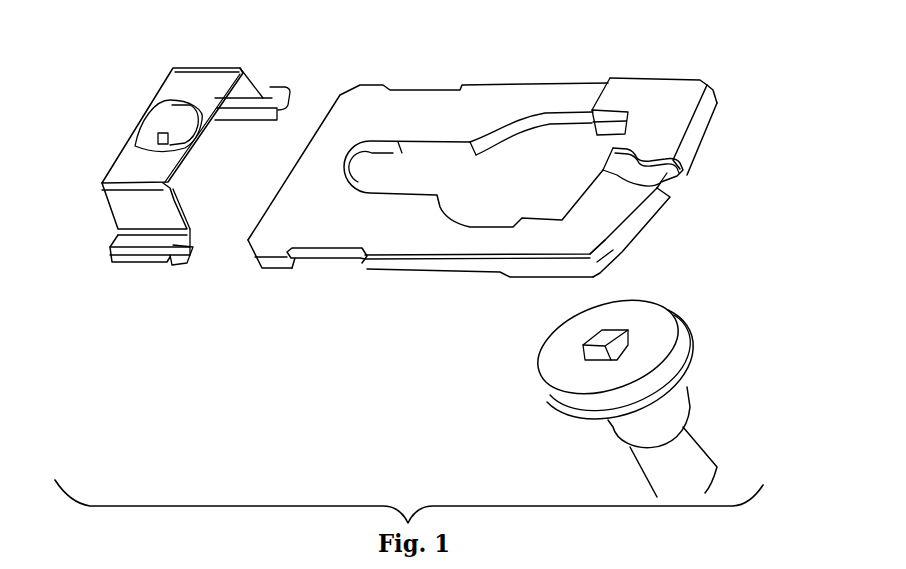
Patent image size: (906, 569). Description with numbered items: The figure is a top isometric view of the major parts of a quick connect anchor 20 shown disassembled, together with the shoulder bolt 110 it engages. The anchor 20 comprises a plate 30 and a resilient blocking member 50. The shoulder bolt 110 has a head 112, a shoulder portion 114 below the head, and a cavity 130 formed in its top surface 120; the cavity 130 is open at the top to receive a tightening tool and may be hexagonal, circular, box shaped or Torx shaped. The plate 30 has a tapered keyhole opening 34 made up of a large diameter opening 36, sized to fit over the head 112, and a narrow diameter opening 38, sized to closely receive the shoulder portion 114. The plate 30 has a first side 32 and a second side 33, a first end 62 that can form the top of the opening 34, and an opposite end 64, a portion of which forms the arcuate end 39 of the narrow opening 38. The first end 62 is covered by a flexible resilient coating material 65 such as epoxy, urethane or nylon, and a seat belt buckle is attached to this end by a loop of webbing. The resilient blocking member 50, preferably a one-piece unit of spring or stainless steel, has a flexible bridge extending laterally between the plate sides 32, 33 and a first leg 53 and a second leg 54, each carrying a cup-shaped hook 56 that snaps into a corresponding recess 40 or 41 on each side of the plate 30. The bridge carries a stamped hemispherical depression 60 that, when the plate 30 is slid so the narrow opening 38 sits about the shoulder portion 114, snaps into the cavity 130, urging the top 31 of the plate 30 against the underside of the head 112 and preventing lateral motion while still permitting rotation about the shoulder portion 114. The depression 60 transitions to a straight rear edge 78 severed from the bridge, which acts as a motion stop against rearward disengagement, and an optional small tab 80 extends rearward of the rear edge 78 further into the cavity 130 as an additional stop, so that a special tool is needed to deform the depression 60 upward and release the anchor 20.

The quick connect anchor 20 is at (338, 48).
The plate 30 is at (412, 275).
The top of the plate 31 is at (277, 237).
The first side 32 is at (482, 98).
The second side 33 is at (385, 240).
The keyhole opening 34 is at (560, 140).
The large diameter opening 36 is at (490, 200).
The narrow diameter opening 38 is at (437, 173).
The arcuate end 39 is at (355, 163).
The recess 40 is at (428, 85).
The recess 41 is at (323, 262).
The resilient blocking member 50 is at (171, 63).
The first leg 53 is at (117, 203).
The second leg 54 is at (241, 92).
The cup-shaped hook 56 is at (165, 265).
The depression 60 is at (186, 125).
The first end 62 is at (652, 175).
The opposite end 64 is at (313, 173).
The flexible resilient coating material 65 is at (668, 108).
The rear edge 78 is at (178, 126).
The tab 80 is at (165, 136).
The shoulder bolt 110 is at (615, 388).
The head 112 is at (563, 408).
The shoulder portion 114 is at (613, 428).
The top surface 120 is at (650, 343).
The cavity 130 is at (600, 352).